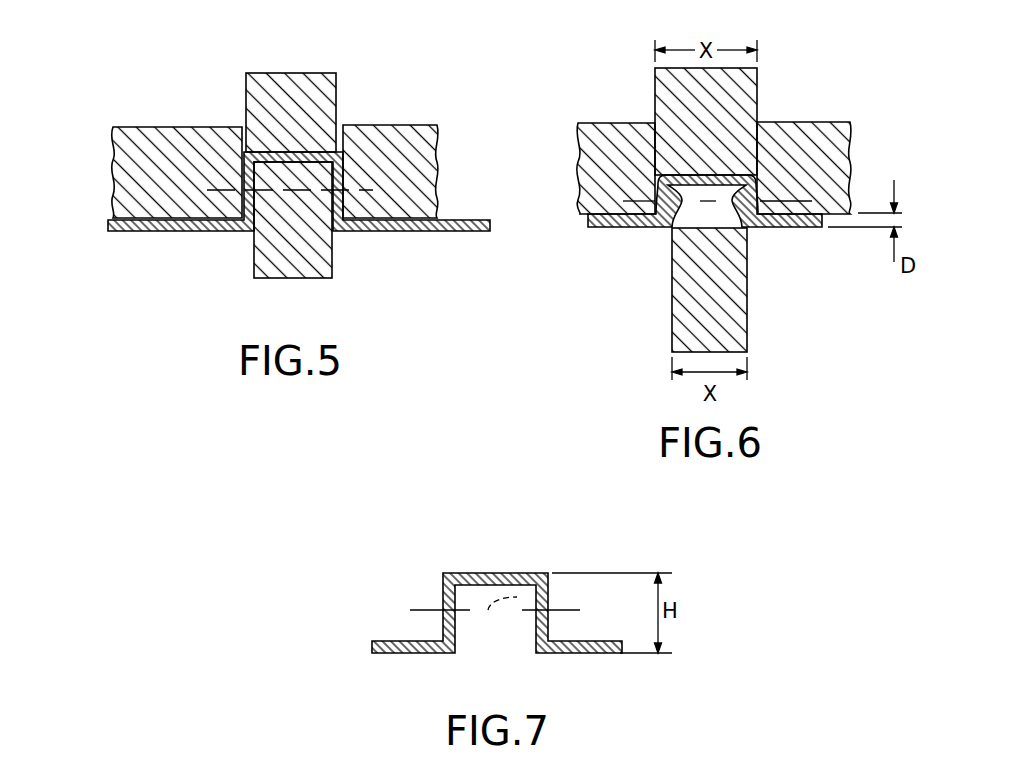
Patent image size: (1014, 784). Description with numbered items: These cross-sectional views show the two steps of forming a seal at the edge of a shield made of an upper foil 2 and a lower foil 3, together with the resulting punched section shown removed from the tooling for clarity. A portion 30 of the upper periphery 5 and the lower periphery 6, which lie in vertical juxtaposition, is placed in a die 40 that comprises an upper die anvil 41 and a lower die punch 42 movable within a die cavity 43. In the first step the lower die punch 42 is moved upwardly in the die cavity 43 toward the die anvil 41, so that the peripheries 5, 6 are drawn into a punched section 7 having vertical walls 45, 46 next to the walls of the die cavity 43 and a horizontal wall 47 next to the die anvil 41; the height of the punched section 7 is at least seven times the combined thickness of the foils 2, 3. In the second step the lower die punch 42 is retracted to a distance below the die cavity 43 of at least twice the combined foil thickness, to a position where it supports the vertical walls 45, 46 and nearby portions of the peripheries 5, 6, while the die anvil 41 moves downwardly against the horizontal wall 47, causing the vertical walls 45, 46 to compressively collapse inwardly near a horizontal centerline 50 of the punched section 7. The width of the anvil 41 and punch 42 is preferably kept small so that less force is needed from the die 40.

In FIG. 5, the upper foil 2 is at (107, 222).
In FIG. 6, the upper foil 2 is at (588, 217).
In FIG. 7, the upper foil 2 is at (372, 643).
In FIG. 5, the lower foil 3 is at (107, 232).
In FIG. 6, the lower foil 3 is at (588, 228).
In FIG. 7, the lower foil 3 is at (372, 652).
In FIG. 5, the upper periphery 5 is at (118, 217).
In FIG. 6, the upper periphery 5 is at (583, 185).
In FIG. 7, the upper periphery 5 is at (398, 641).
In FIG. 5, the lower periphery 6 is at (147, 233).
In FIG. 6, the lower periphery 6 is at (612, 228).
In FIG. 7, the lower periphery 6 is at (410, 653).
In FIG. 5, the punched section 7 is at (358, 171).
In FIG. 7, the punched section 7 is at (568, 593).
In FIG. 5, the portion of the peripheries 30 is at (233, 246).
In FIG. 6, the portion of the peripheries 30 is at (648, 240).
In FIG. 5, the die 40 is at (357, 102).
In FIG. 6, the die 40 is at (774, 99).
In FIG. 5, the upper die anvil 41 is at (259, 73).
In FIG. 6, the upper die anvil 41 is at (655, 85).
In FIG. 5, the lower die punch 42 is at (332, 262).
In FIG. 6, the lower die punch 42 is at (747, 288).
In FIG. 6, the die cavity 43 is at (702, 215).
In FIG. 5, the vertical wall 45 is at (236, 208).
In FIG. 7, the vertical wall 45 is at (445, 590).
In FIG. 5, the vertical wall 46 is at (257, 207).
In FIG. 7, the vertical wall 46 is at (463, 630).
In FIG. 5, the horizontal wall 47 is at (287, 152).
In FIG. 6, the horizontal wall 47 is at (706, 172).
In FIG. 7, the horizontal wall 47 is at (467, 573).
In FIG. 5, the horizontal centerline 50 is at (226, 200).
In FIG. 6, the horizontal centerline 50 is at (605, 150).
In FIG. 7, the horizontal centerline 50 is at (524, 590).